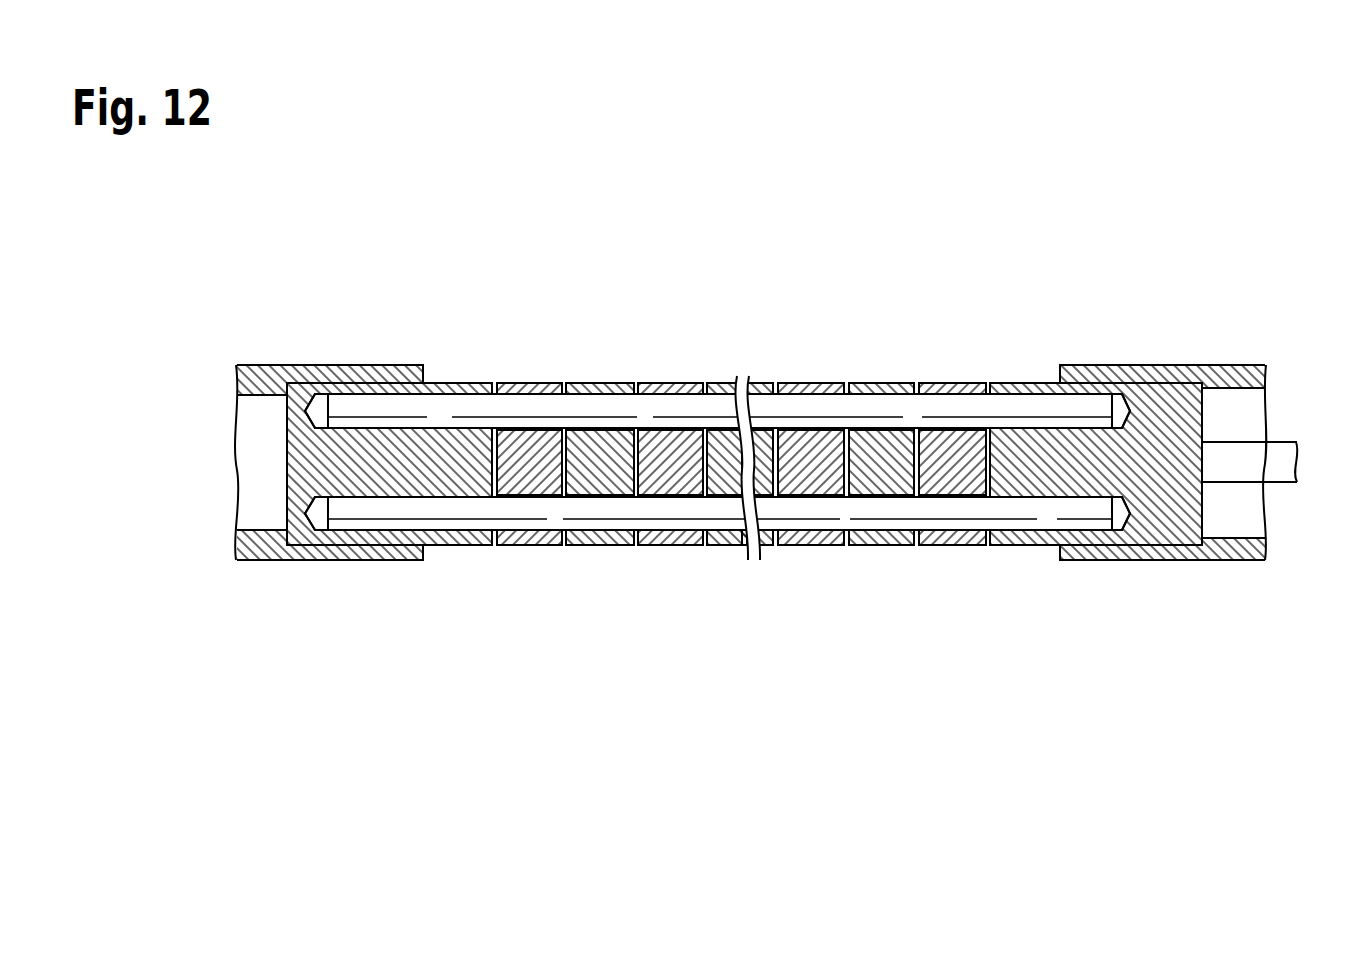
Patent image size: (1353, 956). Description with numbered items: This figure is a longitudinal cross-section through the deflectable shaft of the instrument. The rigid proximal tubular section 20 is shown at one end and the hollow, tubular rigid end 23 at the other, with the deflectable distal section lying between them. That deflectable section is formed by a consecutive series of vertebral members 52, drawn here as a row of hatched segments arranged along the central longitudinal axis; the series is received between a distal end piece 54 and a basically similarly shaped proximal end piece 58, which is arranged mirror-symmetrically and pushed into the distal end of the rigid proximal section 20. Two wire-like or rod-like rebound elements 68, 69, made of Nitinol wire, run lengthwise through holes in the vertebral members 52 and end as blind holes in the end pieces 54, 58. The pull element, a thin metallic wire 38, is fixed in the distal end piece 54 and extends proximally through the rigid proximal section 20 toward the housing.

The rigid end 23 is at (263, 375).
The rigid proximal tubular section 20 is at (1162, 375).
The wire 38 is at (1280, 452).
The distal end piece 54 is at (449, 382).
The proximal end piece 58 is at (1031, 382).
The vertebral member 52 is at (862, 382).
The rebound element 68 is at (902, 405).
The rebound element 69 is at (903, 513).